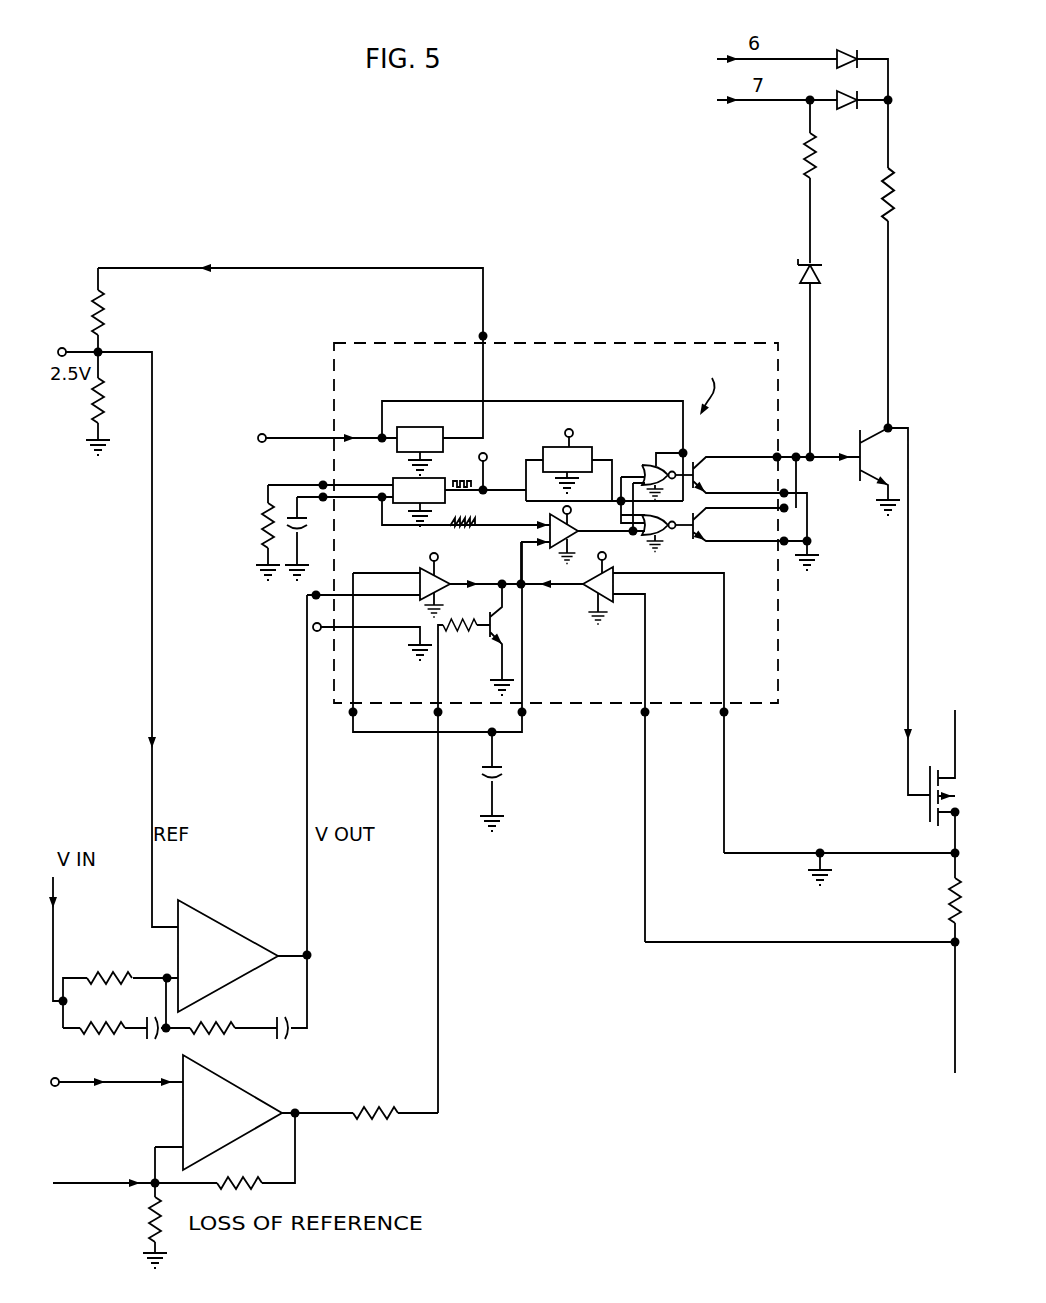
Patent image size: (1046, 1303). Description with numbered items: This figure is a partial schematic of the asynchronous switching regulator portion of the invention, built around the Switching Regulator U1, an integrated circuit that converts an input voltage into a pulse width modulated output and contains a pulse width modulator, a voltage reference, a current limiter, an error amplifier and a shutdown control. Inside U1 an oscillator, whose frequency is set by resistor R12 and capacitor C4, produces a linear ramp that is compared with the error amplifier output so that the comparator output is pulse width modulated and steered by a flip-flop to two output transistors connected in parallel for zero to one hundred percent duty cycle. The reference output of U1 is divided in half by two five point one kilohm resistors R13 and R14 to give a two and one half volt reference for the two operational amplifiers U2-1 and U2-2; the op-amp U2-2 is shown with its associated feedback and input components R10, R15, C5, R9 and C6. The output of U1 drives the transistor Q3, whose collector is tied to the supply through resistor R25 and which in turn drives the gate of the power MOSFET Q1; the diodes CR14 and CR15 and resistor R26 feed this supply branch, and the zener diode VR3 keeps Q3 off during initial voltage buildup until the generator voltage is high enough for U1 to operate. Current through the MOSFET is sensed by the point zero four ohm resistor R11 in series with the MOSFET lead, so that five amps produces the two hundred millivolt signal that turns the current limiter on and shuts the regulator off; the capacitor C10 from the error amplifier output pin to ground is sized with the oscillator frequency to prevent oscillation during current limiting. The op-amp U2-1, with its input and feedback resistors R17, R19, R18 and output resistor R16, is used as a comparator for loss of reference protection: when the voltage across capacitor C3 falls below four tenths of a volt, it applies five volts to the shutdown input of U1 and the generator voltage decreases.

The diode CR14 is at (802, 56).
The diode CR15 is at (805, 114).
The resistor R26 is at (831, 181).
The resistor R25 is at (911, 264).
The zener diode VR3 is at (832, 358).
The transistor Q3 is at (870, 610).
The power MOSFET Q1 is at (946, 771).
The resistor R11 is at (823, 942).
The Switching Regulator U1 is at (590, 342).
The capacitor C10 is at (513, 780).
The resistor R14 is at (105, 312).
The resistor R13 is at (105, 403).
The resistor R12 is at (245, 532).
The capacitor C4 is at (305, 538).
The operational amplifier U2-2 is at (222, 920).
The operational amplifier U2-1 is at (243, 1090).
The resistor R10 is at (113, 987).
The resistor R15 is at (105, 1016).
The capacitor C5 is at (165, 1008).
The resistor R9 is at (233, 1015).
The capacitor C6 is at (287, 997).
The capacitor C3 is at (117, 1105).
The resistor R17 is at (106, 1176).
The resistor R19 is at (225, 1151).
The resistor R16 is at (395, 1097).
The resistor R18 is at (133, 1225).